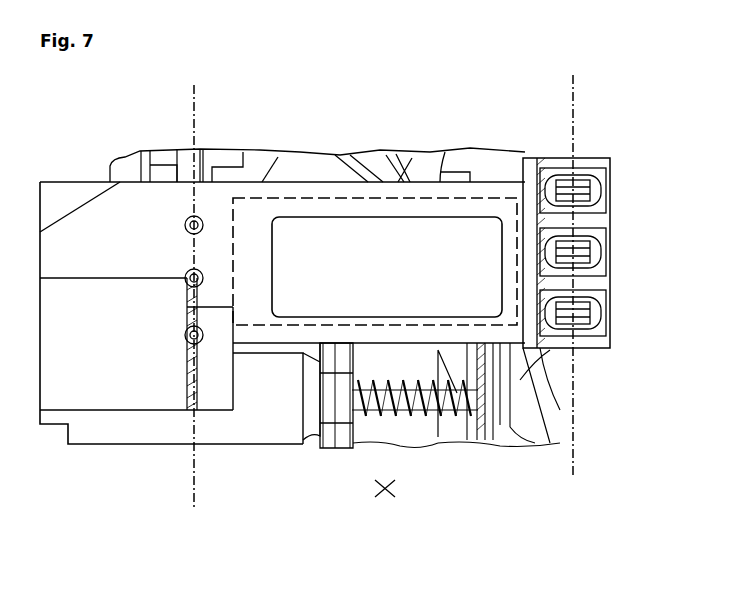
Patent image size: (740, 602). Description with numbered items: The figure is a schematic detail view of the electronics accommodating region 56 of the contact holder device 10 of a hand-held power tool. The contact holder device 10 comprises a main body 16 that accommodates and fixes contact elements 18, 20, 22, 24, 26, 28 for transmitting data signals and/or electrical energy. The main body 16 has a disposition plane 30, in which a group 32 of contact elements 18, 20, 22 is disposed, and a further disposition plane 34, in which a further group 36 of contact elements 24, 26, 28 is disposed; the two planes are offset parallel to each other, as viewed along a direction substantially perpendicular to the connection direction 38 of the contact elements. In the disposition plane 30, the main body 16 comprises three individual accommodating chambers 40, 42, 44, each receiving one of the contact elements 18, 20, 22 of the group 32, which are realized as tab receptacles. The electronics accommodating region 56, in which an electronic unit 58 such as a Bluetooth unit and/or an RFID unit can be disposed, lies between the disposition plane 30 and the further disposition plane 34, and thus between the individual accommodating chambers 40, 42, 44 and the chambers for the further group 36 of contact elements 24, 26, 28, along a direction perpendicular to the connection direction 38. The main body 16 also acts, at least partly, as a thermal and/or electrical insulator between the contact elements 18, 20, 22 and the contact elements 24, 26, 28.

The contact holder device 10 is at (107, 462).
The main body 16 is at (83, 237).
The contact element 18 is at (595, 200).
The contact element 20 is at (595, 260).
The contact element 22 is at (595, 320).
The contact element 24 is at (205, 215).
The contact element 26 is at (208, 270).
The contact element 28 is at (207, 347).
The disposition plane 30 is at (578, 95).
The group of contact elements 32 is at (592, 367).
The further disposition plane 34 is at (194, 480).
The further group of contact elements 36 is at (173, 143).
The connection direction 38 is at (385, 497).
The individual accommodating chamber 40 is at (608, 170).
The individual accommodating chamber 42 is at (608, 232).
The individual accommodating chamber 44 is at (608, 292).
The electronics accommodating region 56 is at (488, 196).
The electronic unit 58 is at (375, 253).